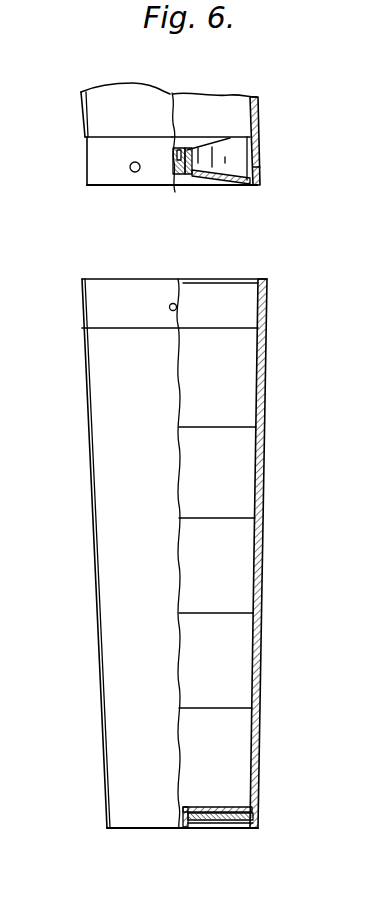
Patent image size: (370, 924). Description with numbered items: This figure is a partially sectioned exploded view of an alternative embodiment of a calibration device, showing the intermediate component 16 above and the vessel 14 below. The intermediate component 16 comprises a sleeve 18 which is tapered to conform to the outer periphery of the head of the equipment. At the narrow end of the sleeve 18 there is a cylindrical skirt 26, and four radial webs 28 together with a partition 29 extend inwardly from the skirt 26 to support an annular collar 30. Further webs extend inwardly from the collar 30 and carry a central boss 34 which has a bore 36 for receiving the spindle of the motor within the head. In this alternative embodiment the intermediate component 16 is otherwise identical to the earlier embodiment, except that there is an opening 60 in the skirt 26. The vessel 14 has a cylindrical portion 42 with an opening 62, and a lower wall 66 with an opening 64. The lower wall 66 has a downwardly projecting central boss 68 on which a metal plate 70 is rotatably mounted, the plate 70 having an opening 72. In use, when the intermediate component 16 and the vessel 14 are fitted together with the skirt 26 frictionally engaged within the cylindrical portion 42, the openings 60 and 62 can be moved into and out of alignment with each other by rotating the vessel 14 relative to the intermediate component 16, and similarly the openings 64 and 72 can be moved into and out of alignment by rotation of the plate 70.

The vessel 14 is at (85, 605).
The intermediate component 16 is at (82, 150).
The sleeve 18 is at (260, 100).
The cylindrical skirt 26 is at (260, 167).
The radial webs 28 is at (227, 167).
The partition 29 is at (226, 182).
The annular collar 30 is at (184, 148).
The central boss 34 is at (177, 188).
The bore 36 is at (172, 162).
The cylindrical portion 42 is at (268, 305).
The opening 60 is at (132, 172).
The opening 62 is at (177, 307).
The opening 64 is at (227, 808).
The lower wall 66 is at (201, 807).
The central boss 68 is at (183, 830).
The metal plate 70 is at (240, 829).
The opening 72 is at (228, 822).